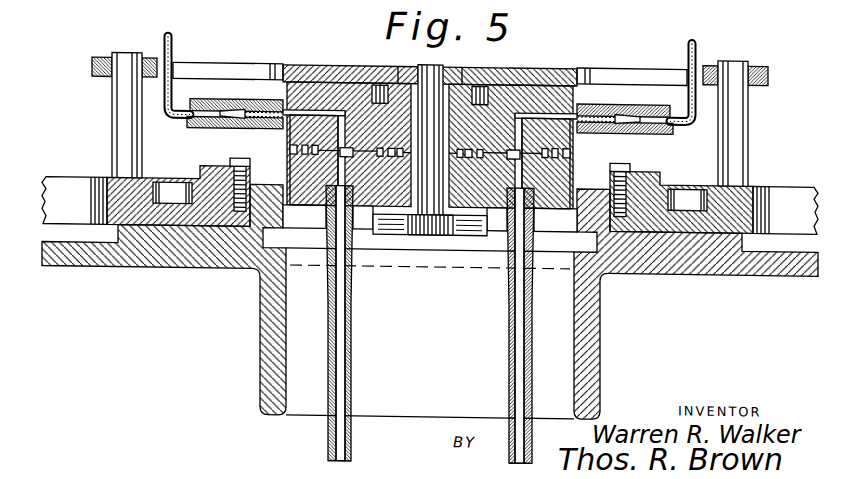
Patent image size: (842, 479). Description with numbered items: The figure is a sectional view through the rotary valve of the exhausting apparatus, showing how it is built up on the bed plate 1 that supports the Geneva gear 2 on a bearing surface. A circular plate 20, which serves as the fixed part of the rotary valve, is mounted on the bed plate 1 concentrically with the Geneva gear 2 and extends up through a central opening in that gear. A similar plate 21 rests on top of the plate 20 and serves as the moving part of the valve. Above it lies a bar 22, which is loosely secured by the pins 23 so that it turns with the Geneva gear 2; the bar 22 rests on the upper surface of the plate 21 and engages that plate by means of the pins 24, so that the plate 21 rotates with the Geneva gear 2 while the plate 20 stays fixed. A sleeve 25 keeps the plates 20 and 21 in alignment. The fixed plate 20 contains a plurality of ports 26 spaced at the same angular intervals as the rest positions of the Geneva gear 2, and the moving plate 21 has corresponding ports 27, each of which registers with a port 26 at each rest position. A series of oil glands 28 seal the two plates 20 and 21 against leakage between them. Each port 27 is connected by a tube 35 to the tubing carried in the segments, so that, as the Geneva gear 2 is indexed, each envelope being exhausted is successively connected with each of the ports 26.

The bed plate 1 is at (92, 256).
The Geneva gear 2 is at (88, 179).
The circular plate 20 is at (362, 225).
The plate 21 is at (579, 67).
The bar 22 is at (575, 66).
The pins 23 is at (120, 99).
The pins 24 is at (378, 80).
The sleeve 25 is at (436, 231).
The ports 26 is at (290, 149).
The ports 27 is at (316, 112).
The oil glands 28 is at (288, 134).
The tube 35 is at (175, 48).